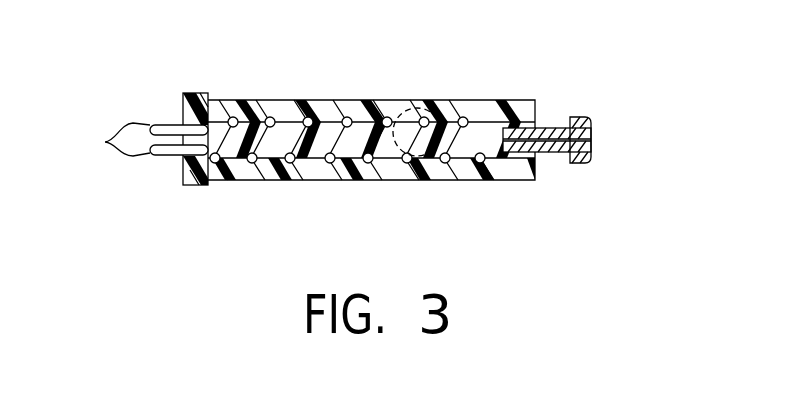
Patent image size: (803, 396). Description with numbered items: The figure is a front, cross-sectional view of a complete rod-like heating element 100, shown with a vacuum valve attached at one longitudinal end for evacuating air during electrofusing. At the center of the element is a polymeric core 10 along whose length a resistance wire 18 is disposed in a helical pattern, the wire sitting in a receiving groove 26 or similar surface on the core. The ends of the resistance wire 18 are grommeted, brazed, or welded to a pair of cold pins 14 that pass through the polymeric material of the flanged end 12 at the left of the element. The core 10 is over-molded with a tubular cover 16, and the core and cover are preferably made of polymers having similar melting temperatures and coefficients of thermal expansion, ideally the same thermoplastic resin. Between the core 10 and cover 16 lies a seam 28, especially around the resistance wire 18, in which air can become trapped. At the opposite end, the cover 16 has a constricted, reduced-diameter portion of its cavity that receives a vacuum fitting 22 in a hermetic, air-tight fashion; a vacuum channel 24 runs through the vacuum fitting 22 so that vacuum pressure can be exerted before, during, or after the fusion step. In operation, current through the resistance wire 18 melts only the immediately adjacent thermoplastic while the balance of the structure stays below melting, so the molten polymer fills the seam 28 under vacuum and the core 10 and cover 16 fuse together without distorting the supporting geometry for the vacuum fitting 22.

The heating element 100 is at (580, 187).
The core 10 is at (480, 100).
The flanged end 12 is at (183, 92).
The cold pins 14 is at (105, 142).
The tubular cover 16 is at (357, 100).
The resistance wire 18 is at (309, 117).
The vacuum fitting 22 is at (593, 127).
The vacuum channel 24 is at (593, 143).
The receiving groove 26 is at (294, 163).
The seam 28 is at (420, 160).